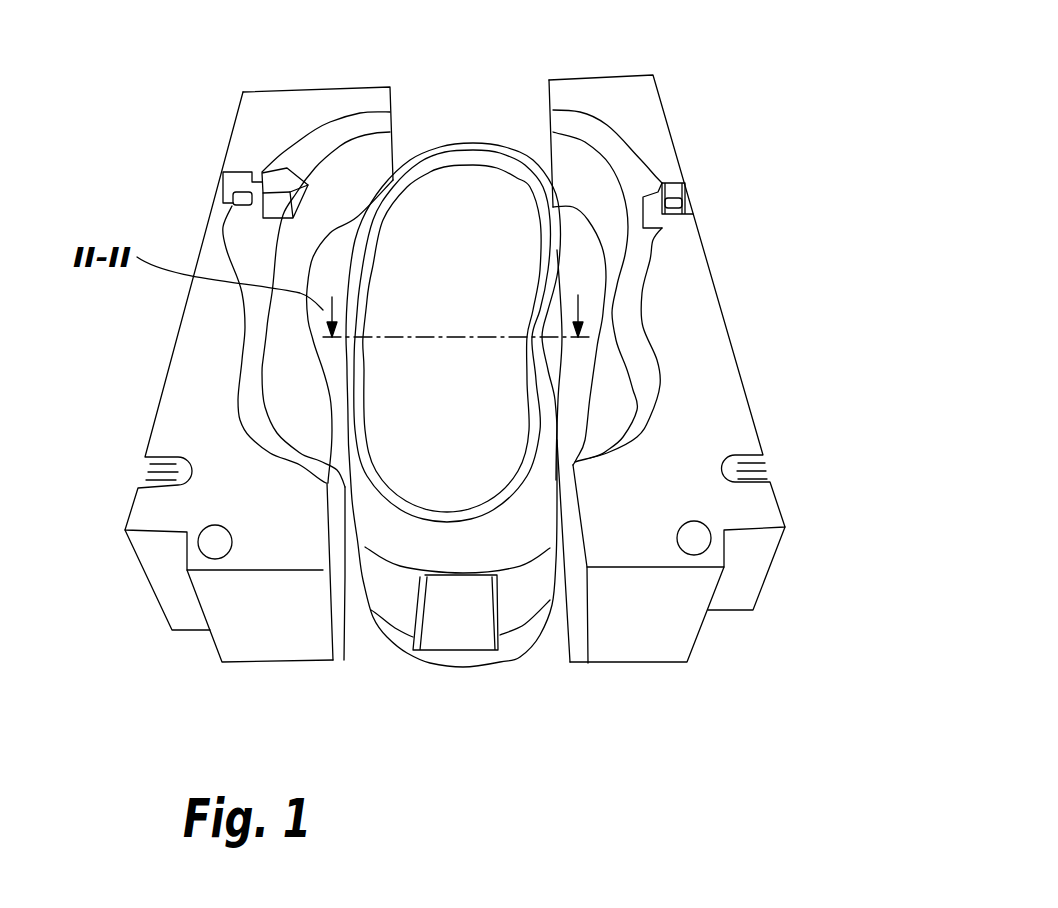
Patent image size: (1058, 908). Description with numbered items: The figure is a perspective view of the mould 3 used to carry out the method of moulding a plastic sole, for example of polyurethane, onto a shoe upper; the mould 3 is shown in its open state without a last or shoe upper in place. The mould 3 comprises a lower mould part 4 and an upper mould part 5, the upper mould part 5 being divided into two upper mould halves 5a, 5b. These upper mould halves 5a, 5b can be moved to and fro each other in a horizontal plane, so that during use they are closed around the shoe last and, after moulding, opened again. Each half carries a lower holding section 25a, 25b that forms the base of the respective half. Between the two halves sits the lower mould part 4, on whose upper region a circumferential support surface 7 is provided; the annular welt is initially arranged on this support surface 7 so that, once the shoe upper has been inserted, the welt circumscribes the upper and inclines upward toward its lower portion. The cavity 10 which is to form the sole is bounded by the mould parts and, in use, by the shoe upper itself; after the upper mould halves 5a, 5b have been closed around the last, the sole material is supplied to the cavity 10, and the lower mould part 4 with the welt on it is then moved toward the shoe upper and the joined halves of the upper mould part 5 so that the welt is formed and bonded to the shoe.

The mould 3 is at (703, 103).
The upper mould part 5 is at (722, 290).
The upper mould half 5a is at (235, 635).
The upper mould half 5b is at (640, 632).
The lower holding section of left mold half 25a is at (340, 582).
The lower holding section of right mold half 25b is at (588, 665).
The lower mould part 4 is at (416, 531).
The circumferential support surface 7 is at (545, 424).
The cavity 10 is at (464, 467).